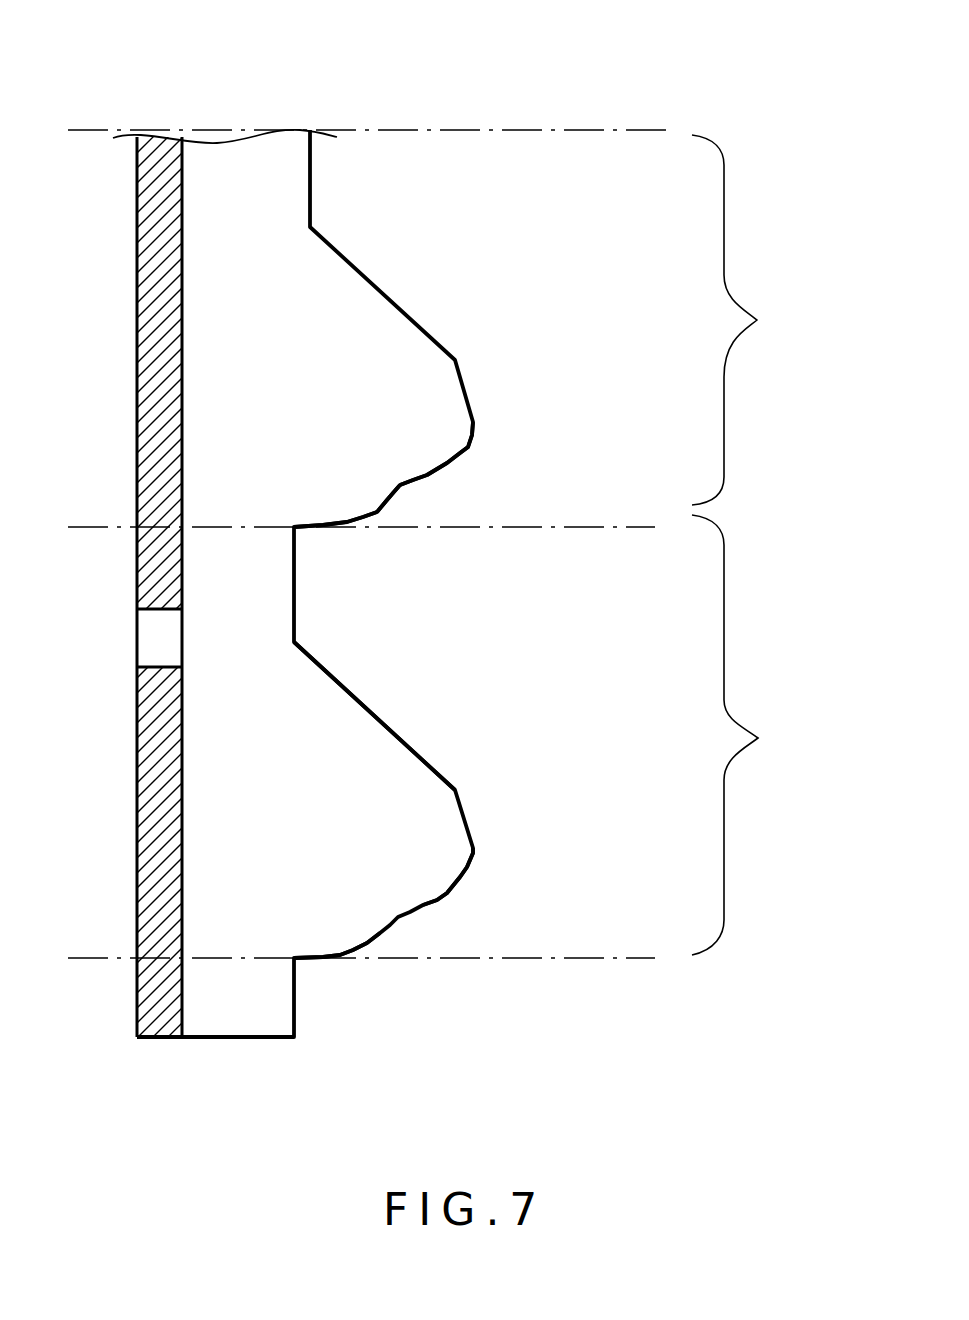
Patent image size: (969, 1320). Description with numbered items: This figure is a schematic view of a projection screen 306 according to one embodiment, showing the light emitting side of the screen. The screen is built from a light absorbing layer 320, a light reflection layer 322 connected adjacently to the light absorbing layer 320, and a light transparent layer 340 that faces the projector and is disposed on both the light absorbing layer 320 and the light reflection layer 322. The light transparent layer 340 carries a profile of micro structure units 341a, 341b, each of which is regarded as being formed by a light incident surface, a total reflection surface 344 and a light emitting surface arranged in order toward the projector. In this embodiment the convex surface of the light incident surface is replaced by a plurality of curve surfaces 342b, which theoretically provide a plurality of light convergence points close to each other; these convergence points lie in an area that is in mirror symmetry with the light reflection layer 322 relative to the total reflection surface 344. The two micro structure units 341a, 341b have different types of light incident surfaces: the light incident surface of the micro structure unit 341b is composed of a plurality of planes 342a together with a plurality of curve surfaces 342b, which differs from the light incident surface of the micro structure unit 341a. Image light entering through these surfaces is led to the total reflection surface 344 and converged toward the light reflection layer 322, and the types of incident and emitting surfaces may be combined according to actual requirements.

The projection screen 306 is at (154, 52).
The light absorbing layer 320 is at (158, 1025).
The light reflection layer 322 is at (145, 640).
The light transparent layer 340 is at (257, 1030).
The micro structure unit 341a is at (767, 735).
The micro structure unit 341b is at (765, 320).
The planes 342a is at (325, 527).
The curve surfaces 342b is at (377, 515).
The total reflection surface 344 is at (423, 760).